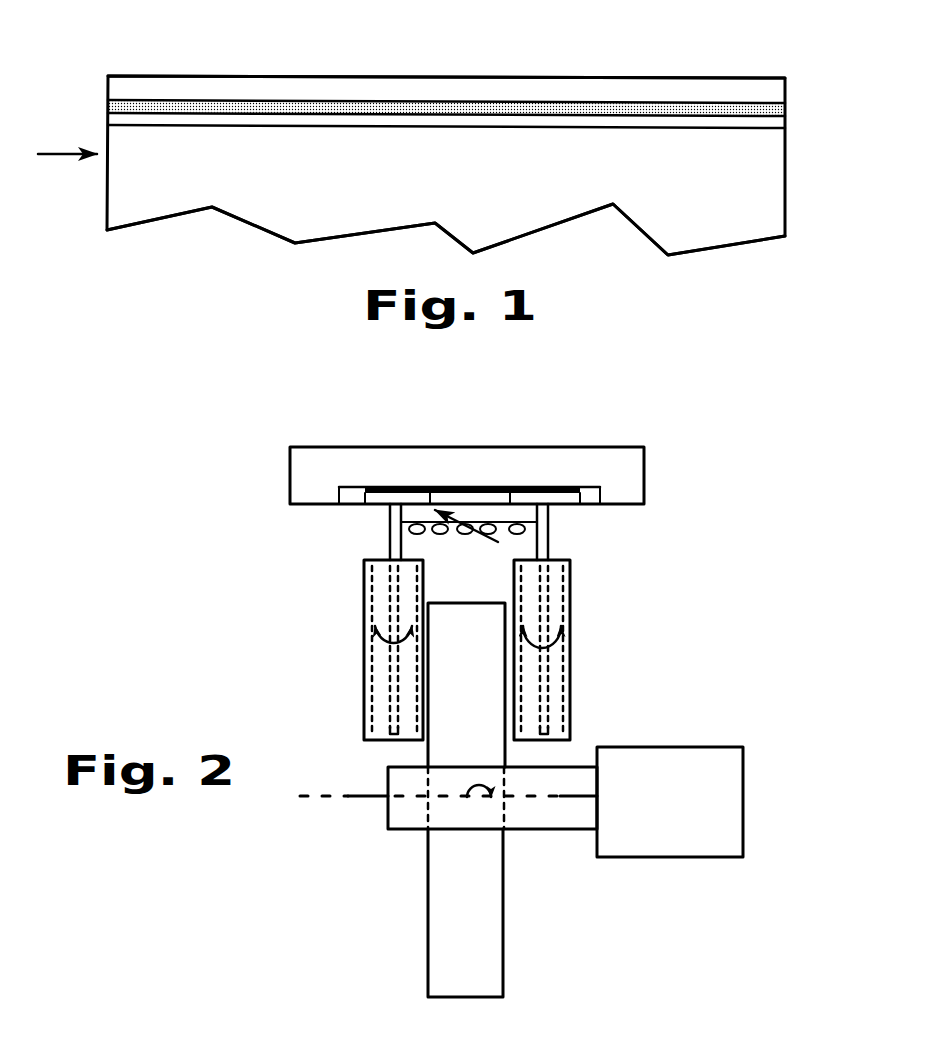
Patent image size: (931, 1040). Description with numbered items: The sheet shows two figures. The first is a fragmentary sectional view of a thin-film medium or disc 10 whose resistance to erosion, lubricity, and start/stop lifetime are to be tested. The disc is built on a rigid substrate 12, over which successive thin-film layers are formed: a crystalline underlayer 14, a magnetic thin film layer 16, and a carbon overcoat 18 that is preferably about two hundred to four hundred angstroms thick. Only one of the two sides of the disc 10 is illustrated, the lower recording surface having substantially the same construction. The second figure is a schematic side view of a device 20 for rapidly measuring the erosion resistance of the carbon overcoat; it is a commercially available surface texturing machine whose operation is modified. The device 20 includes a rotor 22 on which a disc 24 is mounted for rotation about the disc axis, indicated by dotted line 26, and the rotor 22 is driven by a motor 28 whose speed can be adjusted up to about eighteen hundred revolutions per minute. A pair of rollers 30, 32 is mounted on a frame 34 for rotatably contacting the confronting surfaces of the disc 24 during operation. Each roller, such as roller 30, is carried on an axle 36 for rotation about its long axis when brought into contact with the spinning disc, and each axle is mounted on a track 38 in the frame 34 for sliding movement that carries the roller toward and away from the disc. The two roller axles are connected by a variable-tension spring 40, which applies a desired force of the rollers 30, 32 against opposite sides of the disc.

In FIG. 1, the thin-film medium or disc 10 is at (788, 182).
In FIG. 1, the rigid substrate 12 is at (262, 213).
In FIG. 1, the crystalline underlayer 14 is at (773, 122).
In FIG. 1, the magnetic thin film layer 16 is at (380, 110).
In FIG. 1, the carbon overcoat 18 is at (205, 87).
In FIG. 2, the device 20 is at (598, 690).
In FIG. 2, the rotor 22 is at (542, 822).
In FIG. 2, the disc 24 is at (490, 952).
In FIG. 2, the disc axis 26 is at (362, 798).
In FIG. 2, the motor 28 is at (653, 840).
In FIG. 2, the roller 30 is at (573, 612).
In FIG. 2, the roller 32 is at (365, 660).
In FIG. 2, the frame 34 is at (630, 480).
In FIG. 2, the axle 36 is at (545, 518).
In FIG. 2, the track 38 is at (590, 498).
In FIG. 2, the variable-tension spring 40 is at (423, 542).